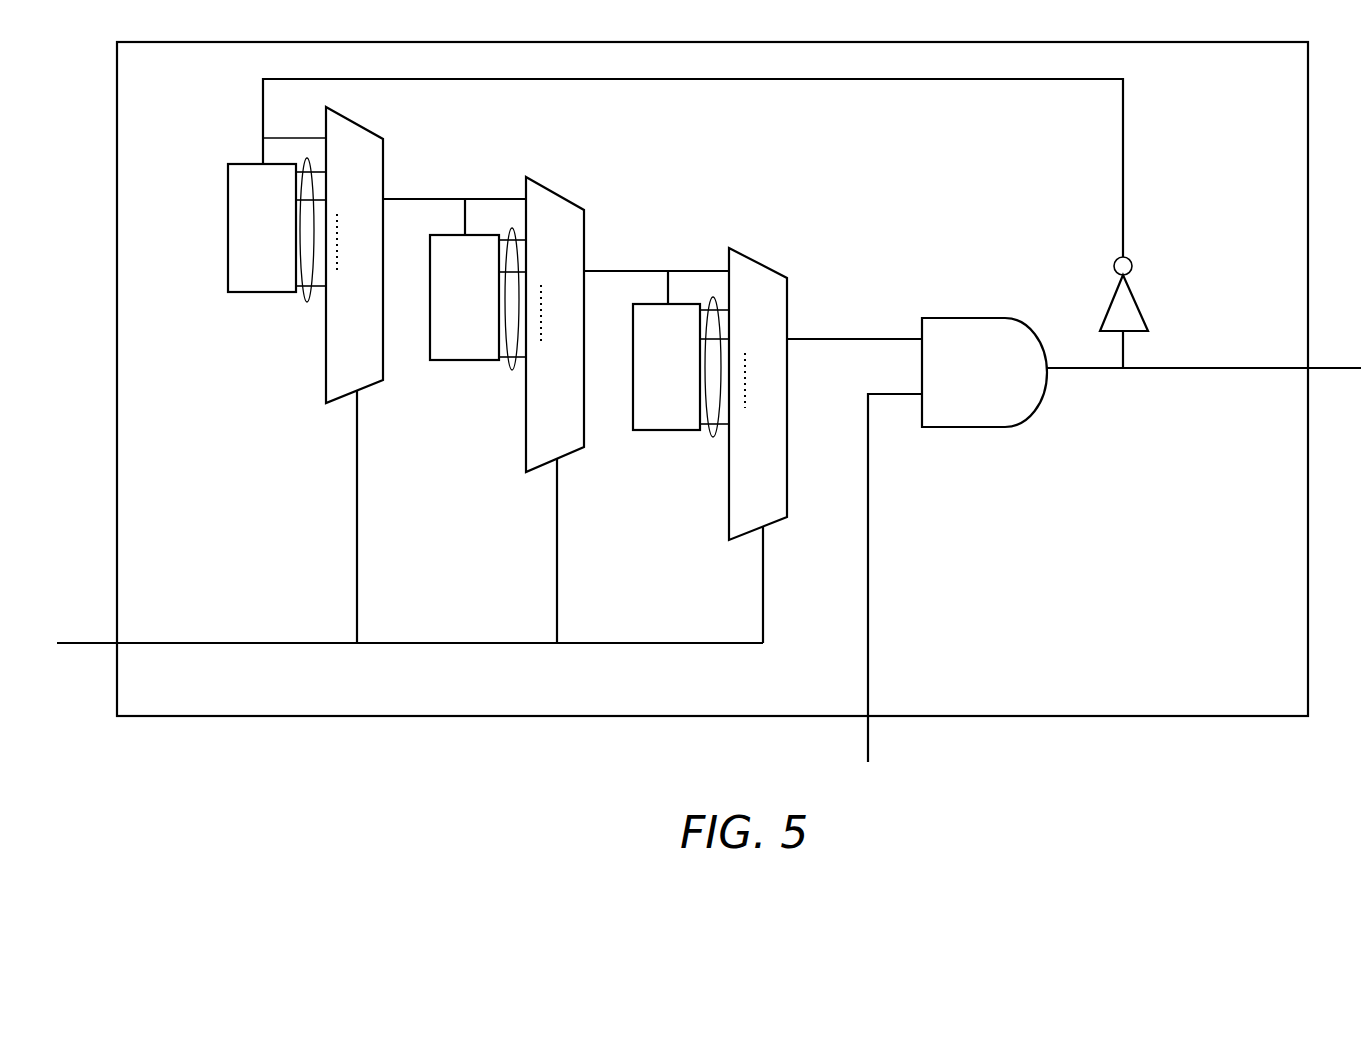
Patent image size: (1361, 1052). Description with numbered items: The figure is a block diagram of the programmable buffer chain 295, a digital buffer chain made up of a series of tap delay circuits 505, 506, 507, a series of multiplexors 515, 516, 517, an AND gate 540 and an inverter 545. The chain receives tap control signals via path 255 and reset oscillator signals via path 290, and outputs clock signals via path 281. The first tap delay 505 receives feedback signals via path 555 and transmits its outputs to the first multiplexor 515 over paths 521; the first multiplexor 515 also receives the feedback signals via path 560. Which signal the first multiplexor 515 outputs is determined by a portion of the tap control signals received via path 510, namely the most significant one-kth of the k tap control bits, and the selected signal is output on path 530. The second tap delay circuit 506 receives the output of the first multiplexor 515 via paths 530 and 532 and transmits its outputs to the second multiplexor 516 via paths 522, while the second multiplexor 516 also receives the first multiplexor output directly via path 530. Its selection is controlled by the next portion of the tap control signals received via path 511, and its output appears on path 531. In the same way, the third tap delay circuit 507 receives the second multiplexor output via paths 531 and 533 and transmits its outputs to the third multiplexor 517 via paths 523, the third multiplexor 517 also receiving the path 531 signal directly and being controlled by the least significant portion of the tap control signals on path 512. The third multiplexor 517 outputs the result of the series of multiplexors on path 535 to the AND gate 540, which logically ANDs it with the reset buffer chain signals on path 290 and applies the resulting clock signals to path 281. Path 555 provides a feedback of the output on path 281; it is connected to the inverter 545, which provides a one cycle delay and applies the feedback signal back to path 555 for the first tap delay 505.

The path 255 is at (97, 641).
The path 281 is at (1240, 366).
The path 290 is at (868, 522).
The programmable buffer chain 295 is at (797, 41).
The first tap delay 505 is at (277, 228).
The second tap delay circuit 506 is at (478, 297).
The third tap delay circuit 507 is at (681, 367).
The path 510 is at (358, 510).
The path 511 is at (558, 572).
The path 512 is at (763, 598).
The first multiplexor 515 is at (375, 383).
The second multiplexor 516 is at (560, 195).
The third multiplexor 517 is at (767, 262).
The paths 521 is at (307, 302).
The paths 522 is at (512, 369).
The paths 523 is at (713, 438).
The path 530 is at (423, 197).
The path 531 is at (632, 268).
The path 532 is at (465, 216).
The path 533 is at (668, 287).
The path 535 is at (828, 339).
The AND gate 540 is at (1037, 335).
The inverter 545 is at (1136, 295).
The path 555 is at (455, 81).
The path 560 is at (282, 136).